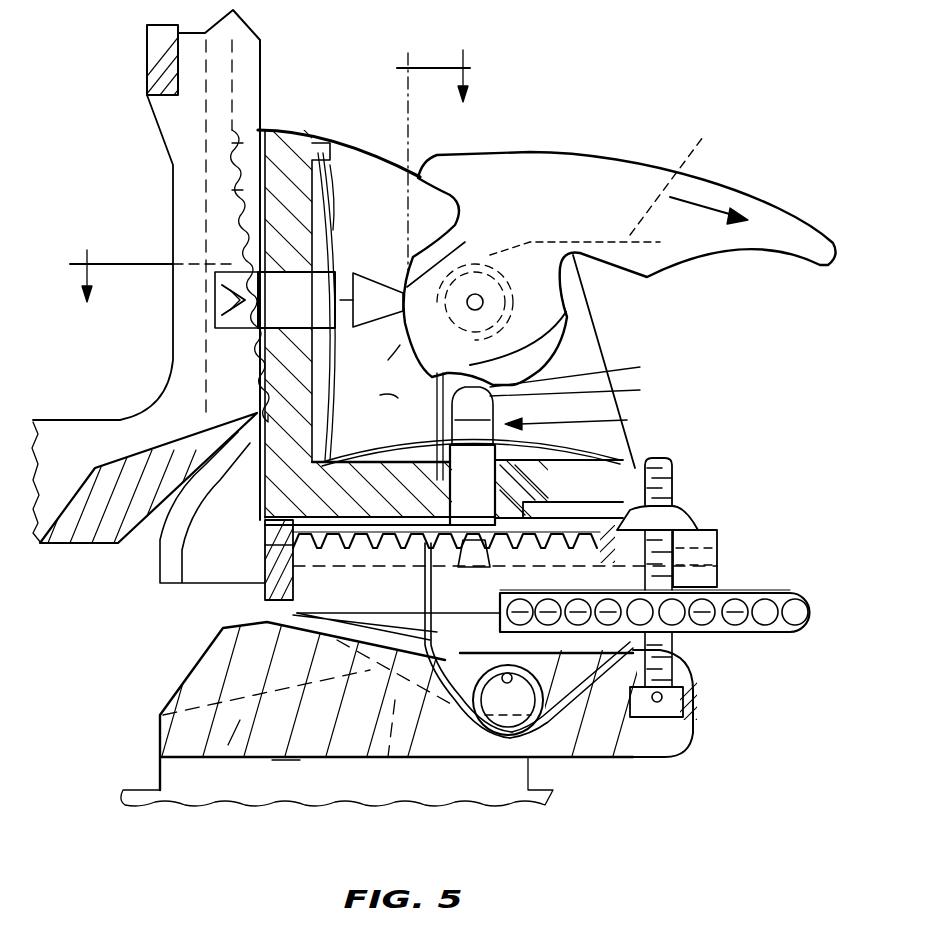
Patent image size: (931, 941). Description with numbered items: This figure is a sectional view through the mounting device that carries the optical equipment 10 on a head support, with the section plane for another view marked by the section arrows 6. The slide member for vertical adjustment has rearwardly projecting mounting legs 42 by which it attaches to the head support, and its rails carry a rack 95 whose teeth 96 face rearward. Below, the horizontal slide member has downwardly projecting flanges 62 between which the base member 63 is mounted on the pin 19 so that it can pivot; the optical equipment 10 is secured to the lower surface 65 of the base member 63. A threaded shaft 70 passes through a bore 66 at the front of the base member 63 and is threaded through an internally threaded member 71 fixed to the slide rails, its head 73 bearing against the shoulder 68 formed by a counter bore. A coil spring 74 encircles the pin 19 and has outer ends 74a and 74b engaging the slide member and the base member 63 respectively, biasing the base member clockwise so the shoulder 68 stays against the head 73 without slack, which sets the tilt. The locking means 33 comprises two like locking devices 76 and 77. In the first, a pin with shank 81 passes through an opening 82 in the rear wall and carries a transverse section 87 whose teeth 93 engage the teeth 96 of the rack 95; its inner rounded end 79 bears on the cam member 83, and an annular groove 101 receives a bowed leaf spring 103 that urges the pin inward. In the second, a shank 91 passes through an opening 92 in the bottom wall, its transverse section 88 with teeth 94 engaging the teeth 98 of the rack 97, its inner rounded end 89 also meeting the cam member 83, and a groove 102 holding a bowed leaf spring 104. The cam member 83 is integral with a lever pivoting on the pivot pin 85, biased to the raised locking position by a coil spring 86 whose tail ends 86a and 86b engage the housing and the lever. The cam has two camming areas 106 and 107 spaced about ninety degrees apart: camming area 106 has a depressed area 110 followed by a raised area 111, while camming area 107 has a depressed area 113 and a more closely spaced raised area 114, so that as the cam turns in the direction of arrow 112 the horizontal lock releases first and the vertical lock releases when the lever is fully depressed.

The section line 6- 6 is at (270, 193).
The optical equipment 10 is at (380, 800).
The pin 19 is at (509, 684).
The locking means 33 is at (432, 228).
The mounting legs 42 is at (92, 459).
The flanges 62 is at (383, 747).
The base member 63 is at (228, 745).
The lower surface 65 is at (272, 760).
The bore 66 is at (690, 667).
The shoulder 68 is at (697, 718).
The threaded shaft 70 is at (673, 577).
The internally threaded member 71 is at (703, 520).
The head 73 is at (683, 753).
The coil spring 74 is at (497, 745).
The outer end 74a is at (300, 622).
The outer end 74b is at (598, 758).
The locking device 76 is at (386, 268).
The locking device 77 is at (632, 430).
The inner rounded end 79 is at (457, 258).
The shank 81 is at (303, 312).
The opening 82 is at (275, 335).
The cam member 83 is at (553, 310).
The pivot pin 85 is at (478, 295).
The coil spring 86 is at (548, 240).
The tail end 86a is at (420, 415).
The tail end 86b is at (690, 175).
The transverse section 87 is at (215, 292).
The transverse section 88 is at (458, 575).
The inner rounded end 89 is at (548, 352).
The shank 91 is at (482, 489).
The opening 92 is at (500, 478).
The teeth 93 is at (222, 310).
The teeth 94 is at (477, 560).
The rack 95 is at (243, 143).
The teeth 96 is at (243, 190).
The rack 97 is at (275, 527).
The teeth 98 is at (290, 555).
The annular groove 101 is at (363, 273).
The annular groove 102 is at (495, 413).
The bowed leaf spring 103 is at (333, 170).
The bowed leaf spring 104 is at (583, 445).
The camming area 106 is at (396, 348).
The camming area 107 is at (498, 302).
The depressed area 110 is at (388, 332).
The raised area 111 is at (380, 400).
The arrow 112 is at (717, 200).
The depressed area 113 is at (535, 397).
The raised area 114 is at (535, 380).